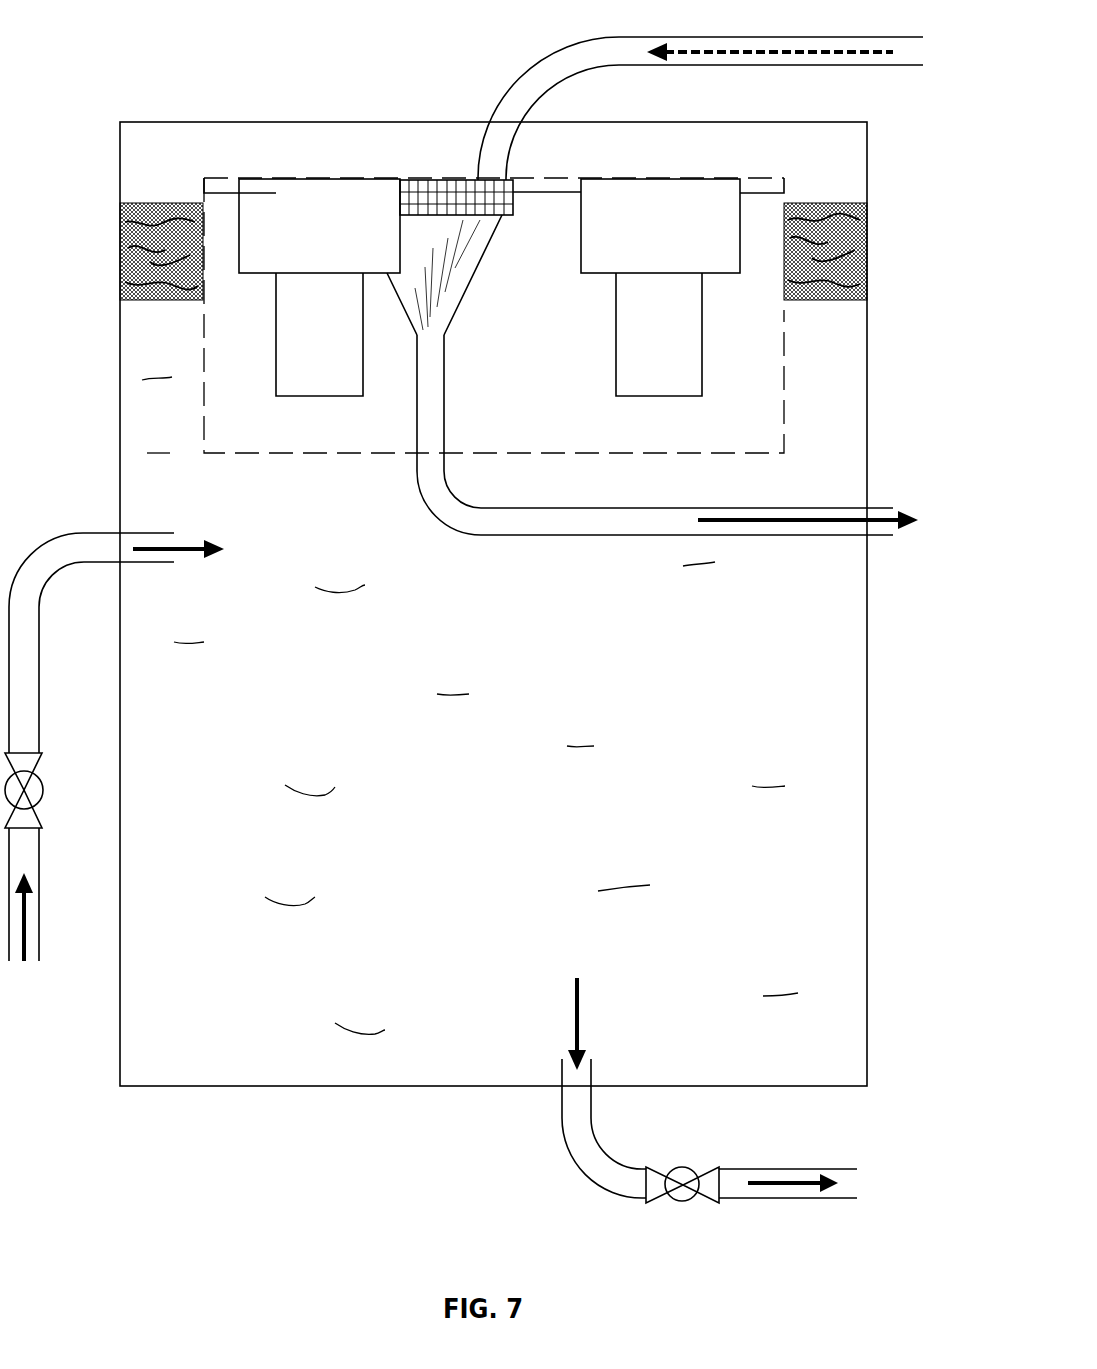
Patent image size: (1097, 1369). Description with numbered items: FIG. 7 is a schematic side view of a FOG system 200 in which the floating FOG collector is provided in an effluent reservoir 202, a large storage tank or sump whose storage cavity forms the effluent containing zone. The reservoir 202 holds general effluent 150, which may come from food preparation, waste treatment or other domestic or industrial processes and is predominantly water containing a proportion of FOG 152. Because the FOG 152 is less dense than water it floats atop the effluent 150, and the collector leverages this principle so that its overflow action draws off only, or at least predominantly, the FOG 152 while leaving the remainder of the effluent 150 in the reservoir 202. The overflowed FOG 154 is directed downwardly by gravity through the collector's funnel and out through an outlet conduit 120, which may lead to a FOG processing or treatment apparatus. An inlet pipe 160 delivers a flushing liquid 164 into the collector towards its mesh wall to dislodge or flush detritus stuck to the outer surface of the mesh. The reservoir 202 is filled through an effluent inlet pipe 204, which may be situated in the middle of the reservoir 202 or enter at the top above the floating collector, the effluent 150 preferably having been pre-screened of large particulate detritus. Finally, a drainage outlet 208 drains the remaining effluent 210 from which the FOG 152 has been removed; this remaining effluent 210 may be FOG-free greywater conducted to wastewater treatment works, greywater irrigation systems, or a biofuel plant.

The FOG system 200 is at (122, 57).
The reservoir 202 is at (120, 473).
The FOG 152 is at (163, 203).
The inlet pipe 160 is at (547, 56).
The flushing liquid 164 is at (714, 57).
The outlet conduit 120 is at (583, 537).
The overflowed FOG 154 is at (886, 508).
The effluent inlet pipe 204 is at (39, 652).
The effluent 150 is at (39, 927).
The drainage outlet 208 is at (562, 1113).
The remaining effluent 210 is at (578, 1011).